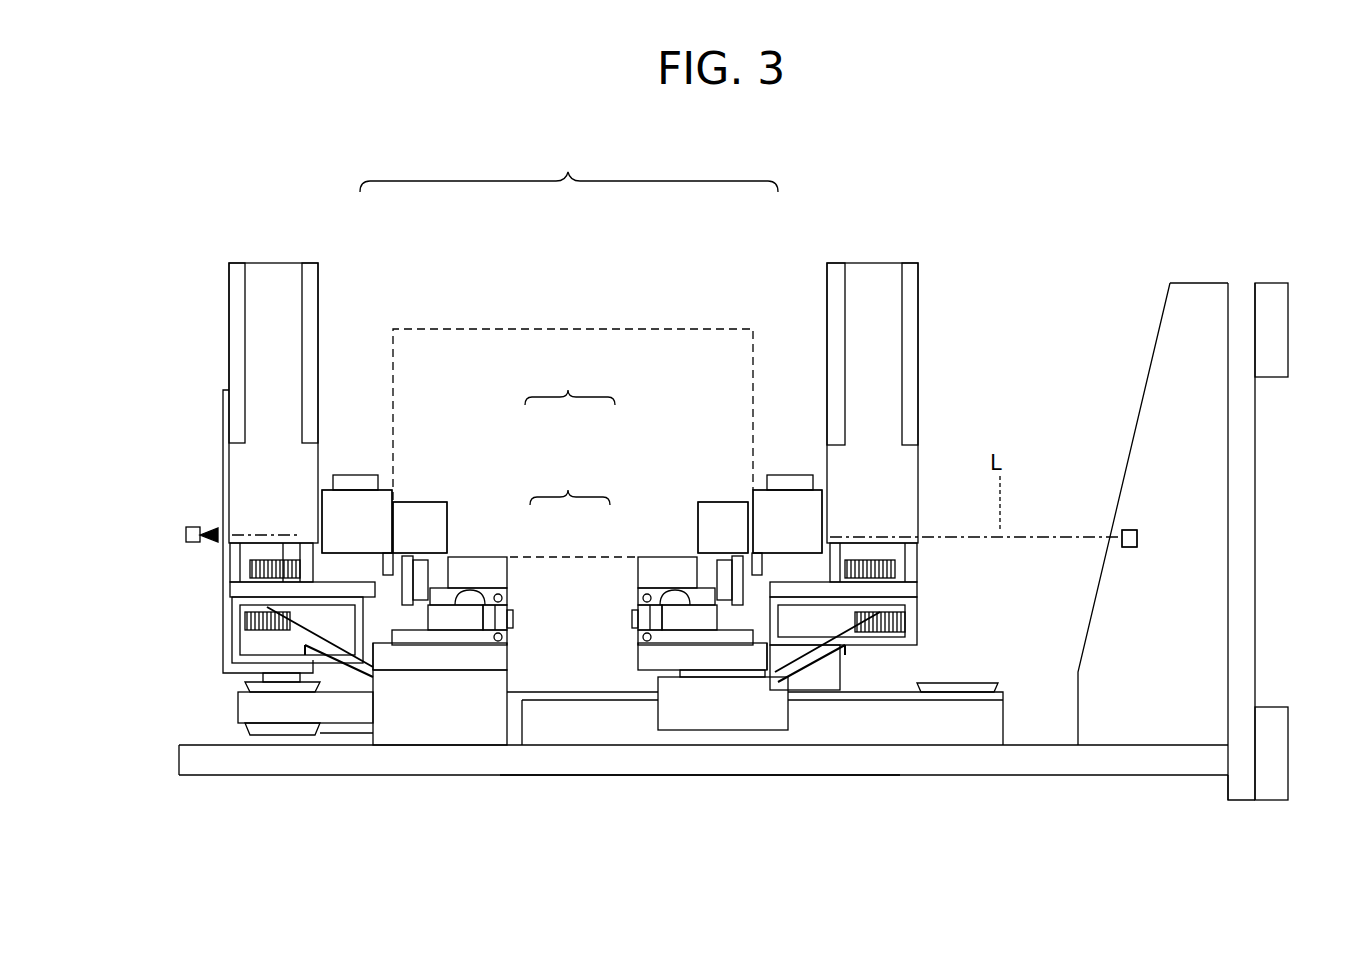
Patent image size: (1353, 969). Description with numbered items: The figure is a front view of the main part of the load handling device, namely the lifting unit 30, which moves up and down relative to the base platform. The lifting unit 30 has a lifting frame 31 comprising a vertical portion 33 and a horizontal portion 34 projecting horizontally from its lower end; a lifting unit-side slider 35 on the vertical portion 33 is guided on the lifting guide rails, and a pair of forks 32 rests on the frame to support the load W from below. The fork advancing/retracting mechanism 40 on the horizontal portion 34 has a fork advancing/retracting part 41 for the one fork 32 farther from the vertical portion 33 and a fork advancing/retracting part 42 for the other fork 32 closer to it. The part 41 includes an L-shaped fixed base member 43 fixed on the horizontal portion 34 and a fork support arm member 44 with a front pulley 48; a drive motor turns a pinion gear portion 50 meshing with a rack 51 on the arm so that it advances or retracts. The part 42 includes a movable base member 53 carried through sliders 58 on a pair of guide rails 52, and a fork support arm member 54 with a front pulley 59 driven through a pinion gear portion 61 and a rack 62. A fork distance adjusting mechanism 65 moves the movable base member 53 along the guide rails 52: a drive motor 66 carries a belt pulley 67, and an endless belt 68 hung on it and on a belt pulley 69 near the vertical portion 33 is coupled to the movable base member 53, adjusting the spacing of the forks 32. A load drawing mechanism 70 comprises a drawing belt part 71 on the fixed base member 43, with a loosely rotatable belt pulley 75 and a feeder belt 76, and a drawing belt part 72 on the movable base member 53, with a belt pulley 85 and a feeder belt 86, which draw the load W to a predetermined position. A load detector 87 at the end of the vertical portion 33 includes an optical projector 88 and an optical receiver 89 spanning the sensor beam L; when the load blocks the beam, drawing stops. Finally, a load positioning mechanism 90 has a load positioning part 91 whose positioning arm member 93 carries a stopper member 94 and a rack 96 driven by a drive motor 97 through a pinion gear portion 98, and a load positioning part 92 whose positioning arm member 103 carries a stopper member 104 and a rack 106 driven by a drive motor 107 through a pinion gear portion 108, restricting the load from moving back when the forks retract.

The lifting unit 30 is at (1068, 250).
The lifting frame 31 is at (928, 780).
The forks 32 is at (485, 555).
The vertical portion 33 is at (1228, 483).
The horizontal portion 34 is at (828, 778).
The lifting unit-side slider 35 is at (1268, 378).
The fork advancing/retracting mechanism 40 is at (570, 487).
The fork advancing/retracting part 41 is at (526, 604).
The fork advancing/retracting part 42 is at (621, 604).
The fixed base member 43 is at (450, 660).
The fork support arm member 44 is at (468, 625).
The front pulley 48 is at (510, 624).
The pinion gear portion 50 is at (240, 612).
The rack 51 is at (425, 630).
The guide rails 52 is at (882, 730).
The movable base member 53 is at (700, 665).
The fork support arm member 54 is at (684, 620).
The sliders 58 is at (764, 700).
The front pulley 59 is at (636, 624).
The pinion gear portion 61 is at (910, 625).
The rack 62 is at (725, 632).
The fork distance adjusting mechanism 65 is at (210, 695).
The drive motor 66 is at (223, 650).
The belt pulley 67 is at (245, 730).
The endless belt 68 is at (290, 708).
The belt pulley 69 is at (990, 683).
The load drawing mechanism 70 is at (569, 166).
The drawing belt part 71 is at (352, 462).
The drawing belt part 72 is at (790, 462).
The belt pulley 75 is at (370, 470).
The feeder belt 76 is at (345, 515).
The belt pulley 85 is at (778, 470).
The feeder belt 86 is at (805, 515).
The load detector 87 is at (1120, 522).
The optical projector 88 is at (1137, 540).
The optical receiver 89 is at (193, 525).
The load positioning mechanism 90 is at (570, 384).
The load positioning part 91 is at (442, 494).
The load positioning part 92 is at (708, 490).
The positioning arm member 93 is at (418, 555).
The stopper member 94 is at (447, 512).
The rack 96 is at (402, 555).
The drive motor 97 is at (229, 330).
The pinion gear portion 98 is at (250, 570).
The positioning arm member 103 is at (728, 540).
The stopper member 104 is at (690, 557).
The rack 106 is at (740, 557).
The drive motor 107 is at (918, 330).
The pinion gear portion 108 is at (900, 568).